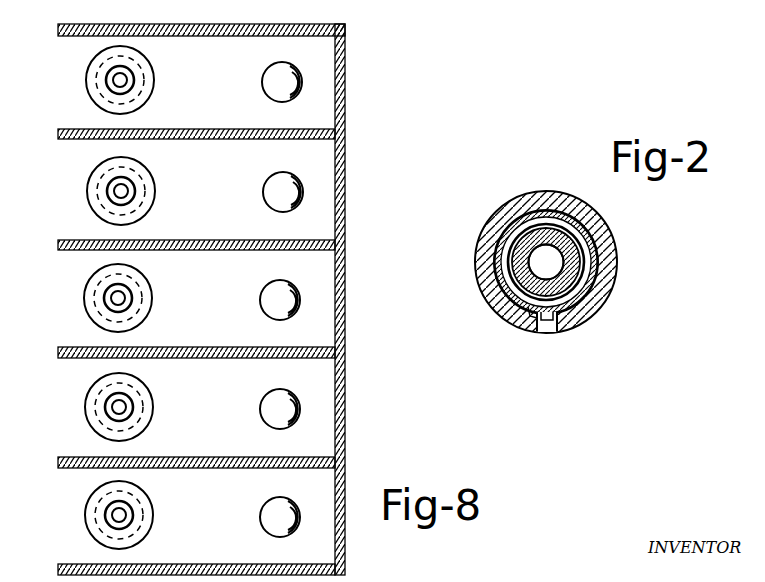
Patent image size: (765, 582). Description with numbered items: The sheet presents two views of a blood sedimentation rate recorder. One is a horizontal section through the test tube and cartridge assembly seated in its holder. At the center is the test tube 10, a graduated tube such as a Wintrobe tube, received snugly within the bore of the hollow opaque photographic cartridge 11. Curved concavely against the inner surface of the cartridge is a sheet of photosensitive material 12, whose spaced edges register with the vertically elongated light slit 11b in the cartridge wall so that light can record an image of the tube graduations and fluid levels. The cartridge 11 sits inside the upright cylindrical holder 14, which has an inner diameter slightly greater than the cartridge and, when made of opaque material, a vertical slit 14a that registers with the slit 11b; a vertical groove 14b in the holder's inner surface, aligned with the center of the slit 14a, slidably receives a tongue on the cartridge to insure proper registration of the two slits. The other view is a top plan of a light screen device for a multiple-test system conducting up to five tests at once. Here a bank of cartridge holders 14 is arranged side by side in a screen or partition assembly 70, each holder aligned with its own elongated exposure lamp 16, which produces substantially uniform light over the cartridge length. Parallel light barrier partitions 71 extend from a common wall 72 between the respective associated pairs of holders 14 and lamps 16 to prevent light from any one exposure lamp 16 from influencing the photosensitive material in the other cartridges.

In FIG. 2, the test tube 10 is at (592, 263).
In FIG. 2, the photographic cartridge 11 is at (505, 298).
In FIG. 2, the light slit 11b is at (535, 320).
In FIG. 2, the photosensitive material 12 is at (572, 250).
In FIG. 8, the cylindrical holder 14 is at (88, 91).
In FIG. 2, the cylindrical holder 14 is at (483, 241).
In FIG. 2, the vertical slit 14a is at (554, 320).
In FIG. 2, the vertical groove 14b is at (546, 330).
In FIG. 8, the exposure lamp 16 is at (290, 182).
In FIG. 8, the screen or partition assembly 70 is at (229, 299).
In FIG. 8, the light barrier partitions 71 is at (208, 36).
In FIG. 8, the common wall 72 is at (347, 283).